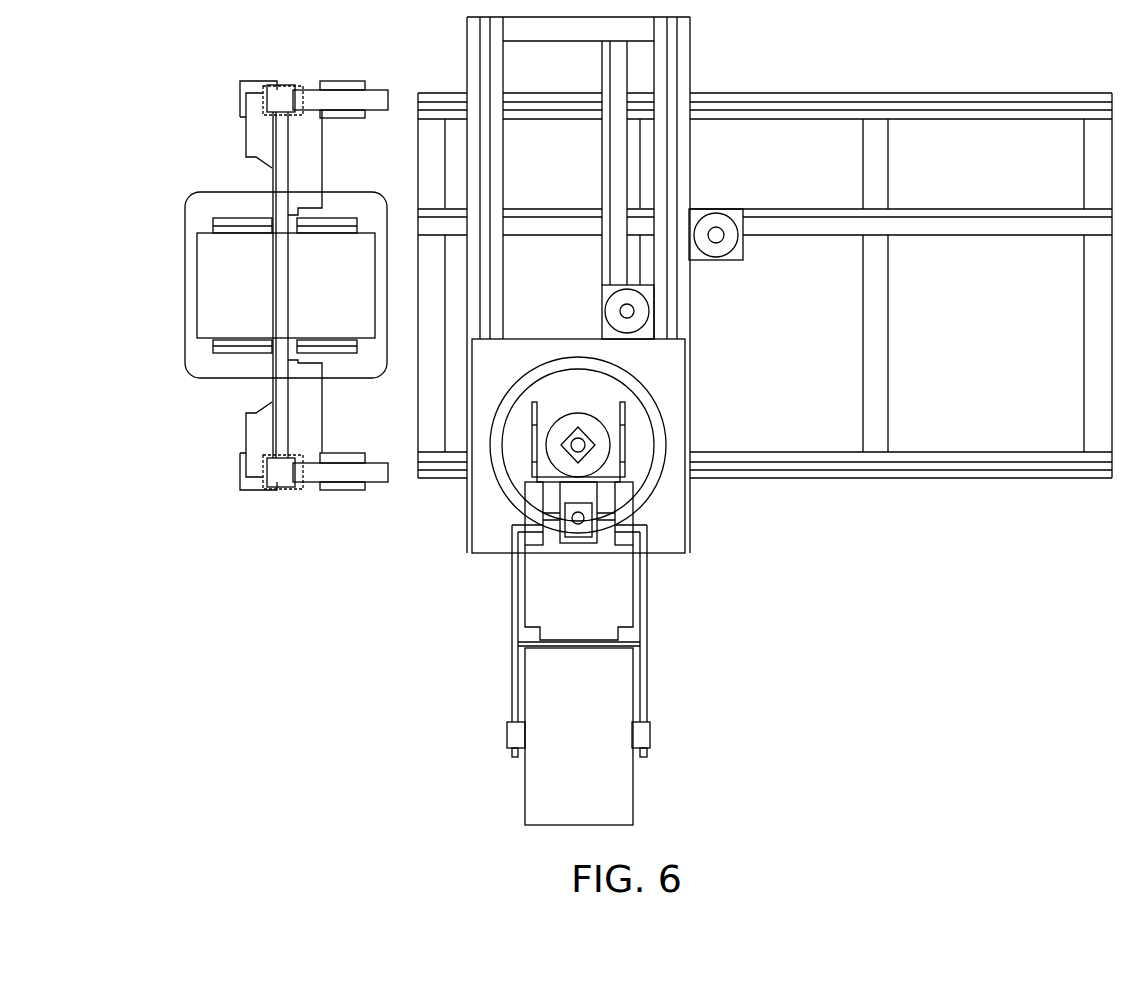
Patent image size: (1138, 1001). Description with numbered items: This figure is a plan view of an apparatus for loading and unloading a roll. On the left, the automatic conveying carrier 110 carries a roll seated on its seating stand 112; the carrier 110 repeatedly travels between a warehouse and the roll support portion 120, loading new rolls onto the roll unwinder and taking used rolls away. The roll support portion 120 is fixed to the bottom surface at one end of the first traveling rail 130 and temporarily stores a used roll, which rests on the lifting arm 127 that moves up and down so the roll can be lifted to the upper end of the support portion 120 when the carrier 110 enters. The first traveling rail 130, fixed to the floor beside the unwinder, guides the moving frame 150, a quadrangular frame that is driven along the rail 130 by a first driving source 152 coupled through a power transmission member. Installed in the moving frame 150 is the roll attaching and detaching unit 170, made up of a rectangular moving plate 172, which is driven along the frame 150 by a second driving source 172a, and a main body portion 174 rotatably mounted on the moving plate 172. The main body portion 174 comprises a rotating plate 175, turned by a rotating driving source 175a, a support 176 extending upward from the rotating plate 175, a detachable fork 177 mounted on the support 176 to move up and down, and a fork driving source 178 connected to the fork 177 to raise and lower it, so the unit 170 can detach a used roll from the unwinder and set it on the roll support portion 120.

The automatic conveying carrier 110 is at (197, 362).
The seating stand 112 is at (243, 218).
The roll support portion 120 is at (295, 500).
The lifting arm 127 is at (255, 142).
The first traveling rail 130 is at (1027, 480).
The moving frame 150 is at (476, 45).
The first driving source 152 is at (716, 235).
The roll attaching and detaching unit 170 is at (640, 582).
The moving plate 172 is at (668, 380).
The second driving source 172a is at (627, 311).
The main body portion 174 is at (610, 613).
The rotating plate 175 is at (579, 497).
The rotating driving source 175a is at (552, 447).
The support 176 is at (621, 490).
The detachable fork 177 is at (780, 562).
The fork driving source 178 is at (578, 548).